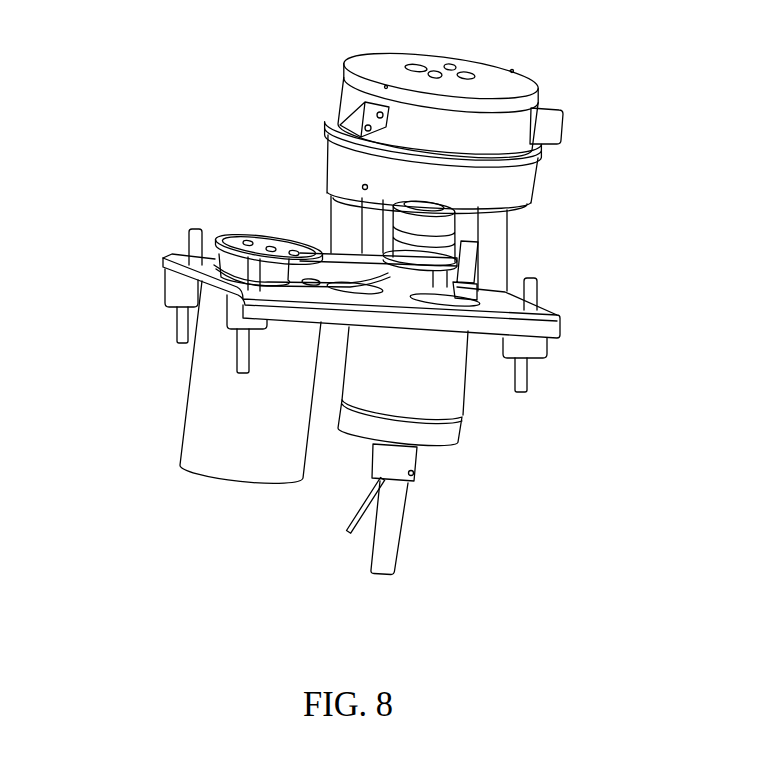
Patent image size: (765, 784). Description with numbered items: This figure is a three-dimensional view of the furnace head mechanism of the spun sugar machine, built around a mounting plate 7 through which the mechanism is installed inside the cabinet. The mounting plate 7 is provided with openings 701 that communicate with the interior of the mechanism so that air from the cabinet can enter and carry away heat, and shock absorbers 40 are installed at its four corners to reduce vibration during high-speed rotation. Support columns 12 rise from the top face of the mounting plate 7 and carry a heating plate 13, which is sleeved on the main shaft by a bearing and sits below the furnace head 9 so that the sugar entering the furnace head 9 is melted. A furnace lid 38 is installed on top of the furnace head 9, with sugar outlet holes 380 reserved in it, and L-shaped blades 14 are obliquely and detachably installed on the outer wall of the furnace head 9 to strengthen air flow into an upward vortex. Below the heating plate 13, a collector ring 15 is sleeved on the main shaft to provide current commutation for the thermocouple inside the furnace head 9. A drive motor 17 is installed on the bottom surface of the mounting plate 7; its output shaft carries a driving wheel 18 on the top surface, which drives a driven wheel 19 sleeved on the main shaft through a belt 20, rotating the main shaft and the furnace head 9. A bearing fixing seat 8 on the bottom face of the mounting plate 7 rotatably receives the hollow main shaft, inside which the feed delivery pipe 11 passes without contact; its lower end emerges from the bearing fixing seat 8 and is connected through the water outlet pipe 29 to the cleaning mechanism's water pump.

The furnace lid 38 is at (502, 77).
The sugar outlet holes 380 is at (451, 68).
The furnace head 9 is at (517, 121).
The blades 14 is at (363, 117).
The heating plate 13 is at (520, 183).
The support columns 12 is at (348, 231).
The driven wheel 19 is at (348, 236).
The collector ring 15 is at (462, 224).
The driving wheel 18 is at (258, 240).
The belt 20 is at (236, 262).
The mounting plate 7 is at (208, 240).
The shock absorbers 40 is at (177, 288).
The openings 701 is at (473, 290).
The drive motor 17 is at (207, 408).
The bearing fixing seat 8 is at (438, 385).
The feed delivery pipe 11 is at (388, 517).
The water outlet pipe 29 is at (362, 513).